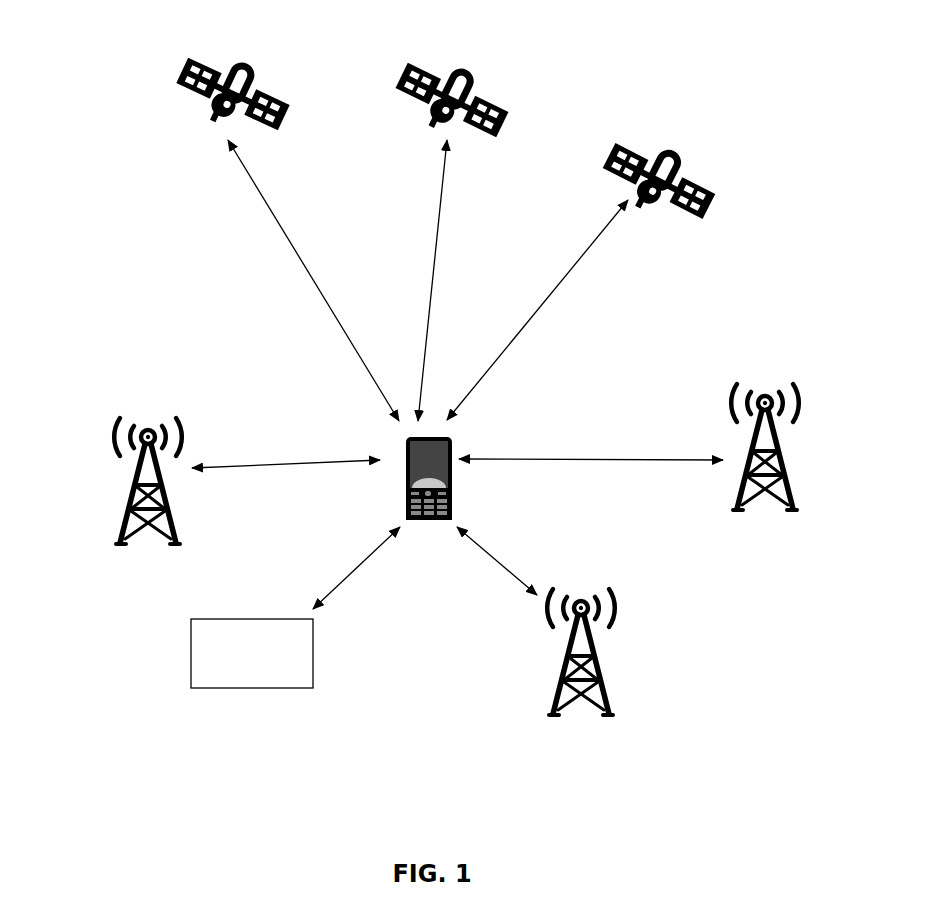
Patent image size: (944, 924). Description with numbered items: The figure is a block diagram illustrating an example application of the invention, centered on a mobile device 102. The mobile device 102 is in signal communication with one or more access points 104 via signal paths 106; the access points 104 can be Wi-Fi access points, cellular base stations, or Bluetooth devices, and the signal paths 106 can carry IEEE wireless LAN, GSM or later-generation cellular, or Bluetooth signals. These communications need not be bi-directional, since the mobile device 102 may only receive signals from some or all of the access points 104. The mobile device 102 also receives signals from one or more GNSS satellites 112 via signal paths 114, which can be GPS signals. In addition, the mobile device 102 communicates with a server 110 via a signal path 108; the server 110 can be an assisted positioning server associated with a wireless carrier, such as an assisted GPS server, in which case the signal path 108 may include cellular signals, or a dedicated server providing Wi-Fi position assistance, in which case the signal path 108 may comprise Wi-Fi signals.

The mobile device 102 is at (402, 493).
The access points 104 is at (112, 497).
The signal paths 106 is at (307, 441).
The signal path 108 is at (354, 577).
The server 110 is at (252, 653).
The GNSS satellites 112 is at (252, 75).
The signal paths 114 is at (289, 241).